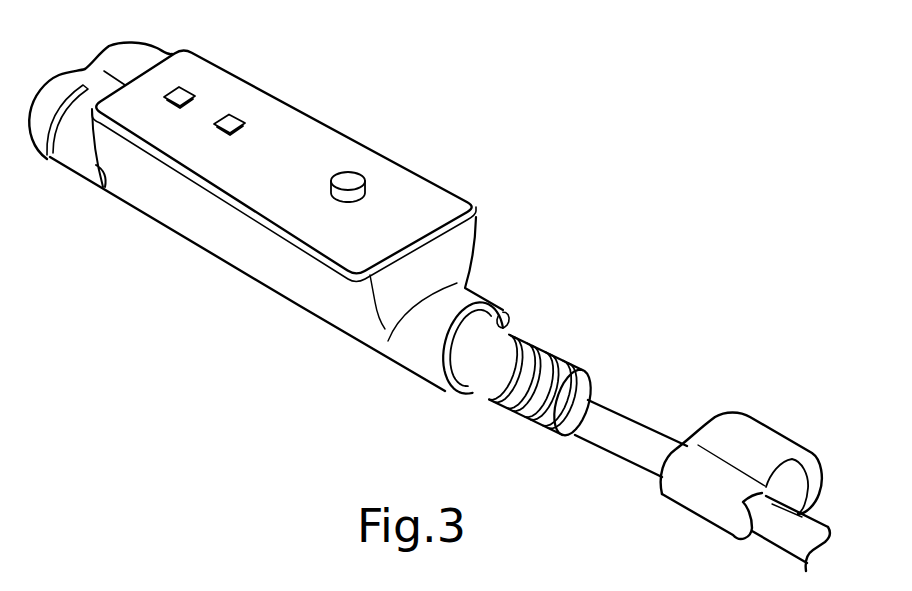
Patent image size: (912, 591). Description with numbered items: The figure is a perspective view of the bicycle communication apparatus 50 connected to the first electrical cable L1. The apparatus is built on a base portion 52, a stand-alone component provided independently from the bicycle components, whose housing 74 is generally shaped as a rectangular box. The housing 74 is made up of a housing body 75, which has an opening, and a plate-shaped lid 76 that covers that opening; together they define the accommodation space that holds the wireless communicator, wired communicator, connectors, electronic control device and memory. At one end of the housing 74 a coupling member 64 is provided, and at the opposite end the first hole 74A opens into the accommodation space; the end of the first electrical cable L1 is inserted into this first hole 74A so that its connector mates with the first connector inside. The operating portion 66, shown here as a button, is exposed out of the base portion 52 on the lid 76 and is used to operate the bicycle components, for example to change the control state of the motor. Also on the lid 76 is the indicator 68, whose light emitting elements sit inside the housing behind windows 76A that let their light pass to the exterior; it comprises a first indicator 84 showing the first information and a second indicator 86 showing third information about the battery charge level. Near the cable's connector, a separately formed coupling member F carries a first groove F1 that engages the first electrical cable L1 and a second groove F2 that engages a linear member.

The bicycle communication apparatus 50 is at (612, 72).
The base portion 52 is at (343, 313).
The coupling member 64 is at (75, 162).
The operating portion 66 is at (350, 177).
The indicator 68 is at (242, 88).
The housing 74 is at (200, 232).
The first hole 74A is at (510, 332).
The housing body 75 is at (253, 263).
The lid 76 is at (320, 122).
The window 76A is at (218, 115).
The first indicator 84 is at (164, 97).
The second indicator 86 is at (243, 125).
The coupling member F is at (760, 432).
The first groove F1 is at (727, 532).
The second groove F2 is at (818, 477).
The first electrical cable L1 is at (617, 442).